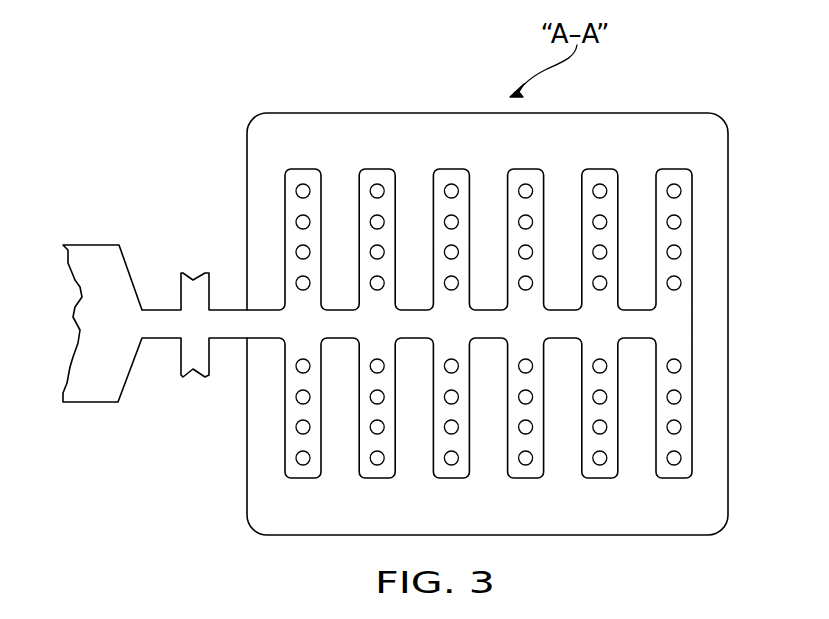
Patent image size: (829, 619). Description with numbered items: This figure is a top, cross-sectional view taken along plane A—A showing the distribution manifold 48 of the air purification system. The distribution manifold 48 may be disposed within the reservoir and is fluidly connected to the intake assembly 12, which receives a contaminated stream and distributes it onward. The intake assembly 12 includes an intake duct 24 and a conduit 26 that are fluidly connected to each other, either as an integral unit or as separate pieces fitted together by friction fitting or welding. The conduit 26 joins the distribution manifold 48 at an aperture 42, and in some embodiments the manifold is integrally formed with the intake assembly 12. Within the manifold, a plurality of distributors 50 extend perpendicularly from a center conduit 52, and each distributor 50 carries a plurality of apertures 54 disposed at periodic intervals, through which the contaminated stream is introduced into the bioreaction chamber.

The intake assembly 12 is at (95, 412).
The intake duct 24 is at (88, 245).
The conduit 26 is at (165, 338).
The aperture 42 is at (248, 324).
The distribution manifold 48 is at (220, 123).
The distributors 50 is at (305, 168).
The center conduit 52 is at (630, 323).
The apertures 54 is at (598, 188).